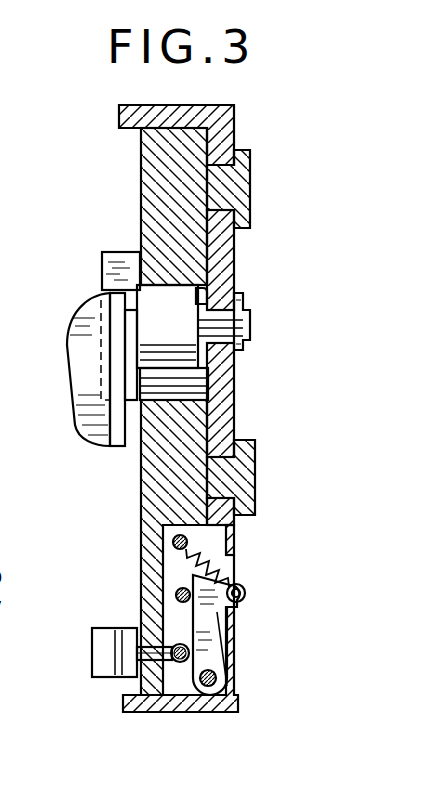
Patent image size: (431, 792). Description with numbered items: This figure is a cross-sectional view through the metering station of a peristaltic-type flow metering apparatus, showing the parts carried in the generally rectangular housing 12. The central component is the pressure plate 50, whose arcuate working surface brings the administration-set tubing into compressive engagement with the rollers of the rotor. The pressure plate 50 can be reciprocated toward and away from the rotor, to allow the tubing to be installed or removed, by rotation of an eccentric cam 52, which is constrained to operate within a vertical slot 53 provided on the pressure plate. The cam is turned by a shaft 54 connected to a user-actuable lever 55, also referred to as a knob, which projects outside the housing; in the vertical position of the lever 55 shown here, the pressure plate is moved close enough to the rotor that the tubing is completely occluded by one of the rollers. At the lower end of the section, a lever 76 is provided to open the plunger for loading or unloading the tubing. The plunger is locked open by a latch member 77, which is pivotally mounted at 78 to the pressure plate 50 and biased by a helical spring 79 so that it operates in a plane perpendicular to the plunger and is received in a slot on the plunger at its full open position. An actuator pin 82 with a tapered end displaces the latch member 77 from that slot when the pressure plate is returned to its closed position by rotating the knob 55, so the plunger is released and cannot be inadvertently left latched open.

The housing 12 is at (175, 105).
The pressure plate 50 is at (150, 160).
The eccentric cam 52 is at (157, 298).
The vertical slot 53 is at (205, 297).
The shaft 54 is at (222, 325).
The lever 55 is at (82, 347).
The lever 76 is at (92, 645).
The latch member 77 is at (242, 610).
The pivot 78 is at (215, 677).
The helical spring 79 is at (240, 572).
The actuator pin 82 is at (176, 592).